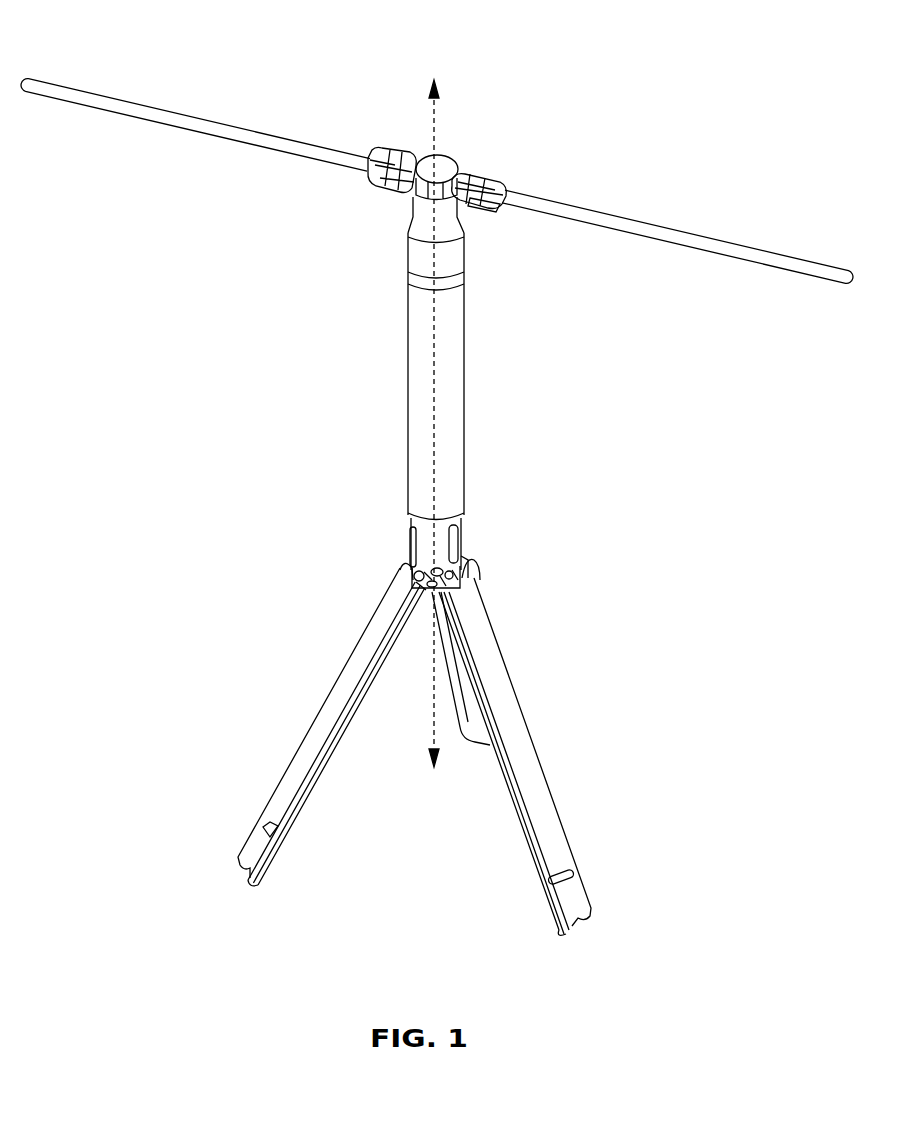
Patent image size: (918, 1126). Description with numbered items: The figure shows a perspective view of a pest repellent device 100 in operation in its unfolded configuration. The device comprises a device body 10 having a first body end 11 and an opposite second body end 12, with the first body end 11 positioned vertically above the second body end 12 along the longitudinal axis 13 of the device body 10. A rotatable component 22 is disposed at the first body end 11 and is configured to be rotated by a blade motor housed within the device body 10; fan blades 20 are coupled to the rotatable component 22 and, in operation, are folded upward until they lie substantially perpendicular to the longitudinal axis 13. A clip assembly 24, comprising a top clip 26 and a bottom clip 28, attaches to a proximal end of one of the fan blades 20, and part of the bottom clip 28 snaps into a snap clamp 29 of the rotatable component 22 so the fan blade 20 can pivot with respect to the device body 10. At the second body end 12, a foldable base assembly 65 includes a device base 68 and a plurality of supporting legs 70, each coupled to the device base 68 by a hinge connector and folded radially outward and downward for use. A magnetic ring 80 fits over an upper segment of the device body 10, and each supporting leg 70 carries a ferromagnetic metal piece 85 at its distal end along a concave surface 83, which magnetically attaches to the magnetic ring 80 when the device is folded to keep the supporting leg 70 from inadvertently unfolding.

The pest repellent device 100 is at (327, 70).
The device body 10 is at (406, 388).
The first body end 11 is at (473, 250).
The second body end 12 is at (482, 505).
The longitudinal axis 13 is at (437, 112).
The fan blade 20 is at (204, 128).
The rotatable component 22 is at (424, 162).
The clip assembly 24 is at (520, 153).
The top clip 26 is at (474, 177).
The bottom clip 28 is at (478, 208).
The snap clamp 29 is at (452, 176).
The foldable base assembly 65 is at (500, 551).
The device base 68 is at (420, 548).
The supporting leg 70 is at (498, 686).
The magnetic ring 80 is at (408, 273).
The concave surface 83 is at (530, 770).
The ferromagnetic metal piece 85 is at (575, 873).